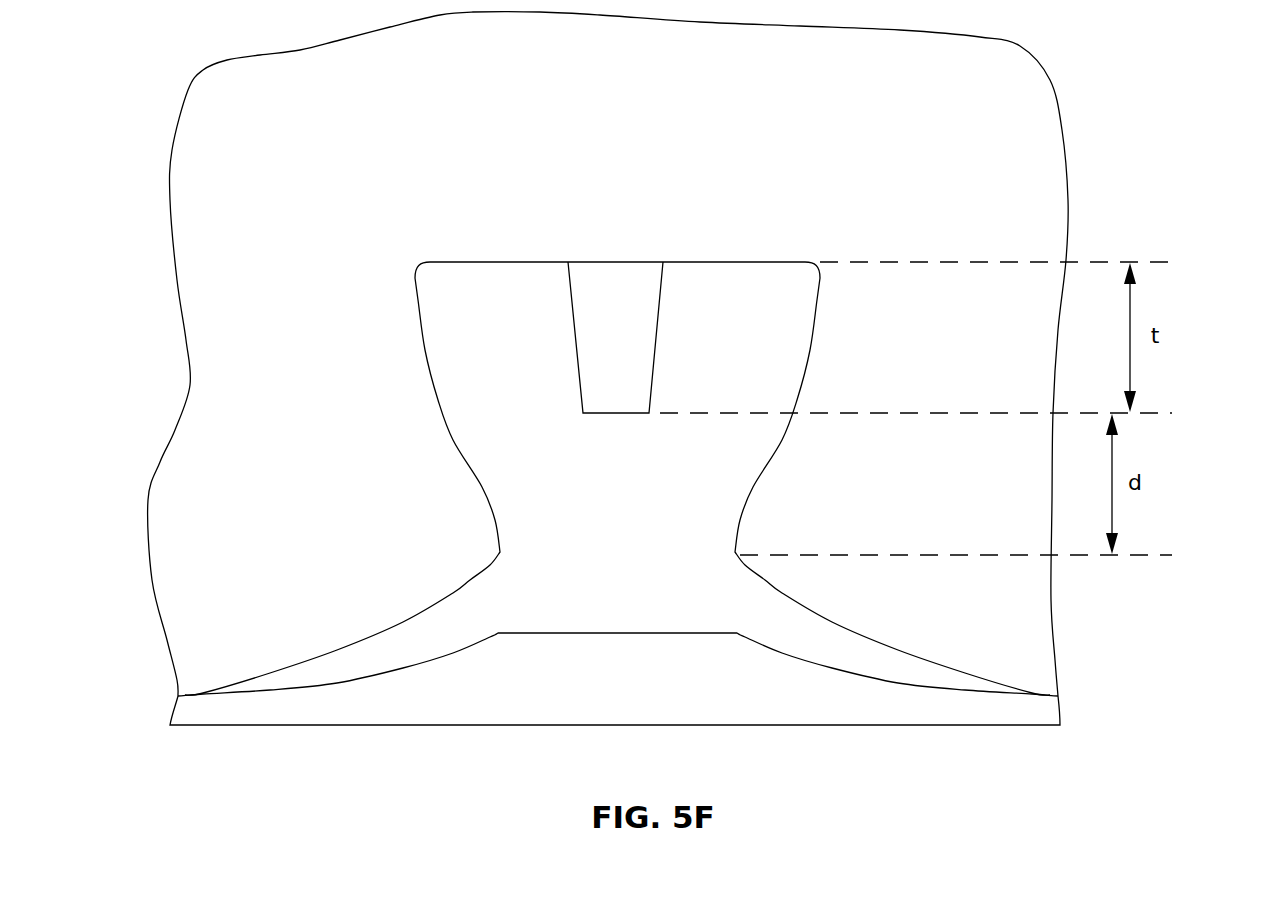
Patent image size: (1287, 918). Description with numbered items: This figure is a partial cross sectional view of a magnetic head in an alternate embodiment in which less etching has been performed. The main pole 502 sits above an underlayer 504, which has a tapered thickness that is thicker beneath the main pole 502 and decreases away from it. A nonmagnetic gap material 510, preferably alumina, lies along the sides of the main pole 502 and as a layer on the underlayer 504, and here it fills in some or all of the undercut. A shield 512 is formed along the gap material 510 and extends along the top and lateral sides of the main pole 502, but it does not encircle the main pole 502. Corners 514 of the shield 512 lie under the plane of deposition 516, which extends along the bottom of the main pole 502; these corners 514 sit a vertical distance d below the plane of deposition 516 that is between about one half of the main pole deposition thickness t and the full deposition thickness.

The shield 512 is at (355, 135).
The gap material 510 is at (519, 330).
The main pole 502 is at (635, 320).
The underlayer 504 is at (635, 693).
The corners 514 is at (504, 557).
The plane of deposition 516 is at (1150, 414).